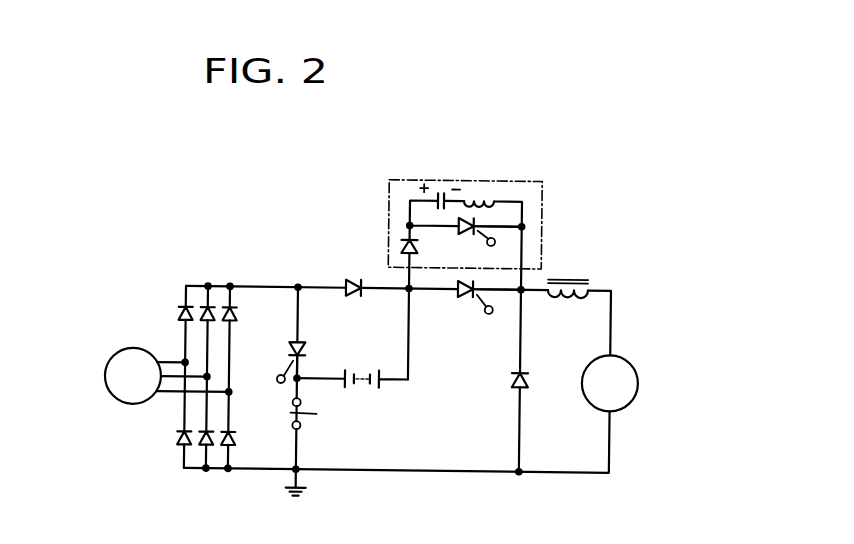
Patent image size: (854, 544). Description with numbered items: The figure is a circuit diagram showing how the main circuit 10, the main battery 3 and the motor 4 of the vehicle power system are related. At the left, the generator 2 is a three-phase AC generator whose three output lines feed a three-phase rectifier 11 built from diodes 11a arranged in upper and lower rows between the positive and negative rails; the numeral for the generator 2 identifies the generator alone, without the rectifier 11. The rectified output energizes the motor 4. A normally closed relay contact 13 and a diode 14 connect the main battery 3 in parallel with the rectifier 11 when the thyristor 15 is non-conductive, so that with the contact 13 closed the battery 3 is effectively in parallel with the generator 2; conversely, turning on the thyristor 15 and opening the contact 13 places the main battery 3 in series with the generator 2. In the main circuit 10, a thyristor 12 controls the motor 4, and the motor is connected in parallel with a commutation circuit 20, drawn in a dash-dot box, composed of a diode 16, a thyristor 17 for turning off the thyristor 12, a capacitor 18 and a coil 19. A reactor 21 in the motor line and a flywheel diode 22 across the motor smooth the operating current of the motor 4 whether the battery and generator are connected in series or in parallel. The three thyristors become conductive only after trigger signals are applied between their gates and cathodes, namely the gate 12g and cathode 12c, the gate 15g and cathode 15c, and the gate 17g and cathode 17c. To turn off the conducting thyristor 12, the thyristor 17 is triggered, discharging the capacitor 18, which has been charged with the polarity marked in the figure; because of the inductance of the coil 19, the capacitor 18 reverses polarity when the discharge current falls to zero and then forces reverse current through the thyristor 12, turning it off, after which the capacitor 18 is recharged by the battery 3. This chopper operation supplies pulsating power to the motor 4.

The generator 2 is at (135, 351).
The three-phase rectifier 11 is at (209, 304).
The diodes 11a is at (180, 436).
The main battery 3 is at (362, 373).
The motor 4 is at (632, 400).
The main circuit 10 is at (471, 388).
The thyristor 12 is at (459, 296).
The gate 12g is at (488, 313).
The cathode 12c is at (475, 284).
The normally closed relay contact 13 is at (290, 414).
The diode 14 is at (352, 281).
The thyristor 15 is at (294, 341).
The gate 15g is at (279, 376).
The cathode 15c is at (300, 372).
The diode 16 is at (402, 244).
The thyristor 17 is at (461, 231).
The gate 17g is at (488, 245).
The cathode 17c is at (500, 225).
The capacitor 18 is at (440, 192).
The coil 19 is at (478, 197).
The commutation circuit 20 is at (544, 181).
The reactor 21 is at (565, 277).
The flywheel diode 22 is at (529, 375).